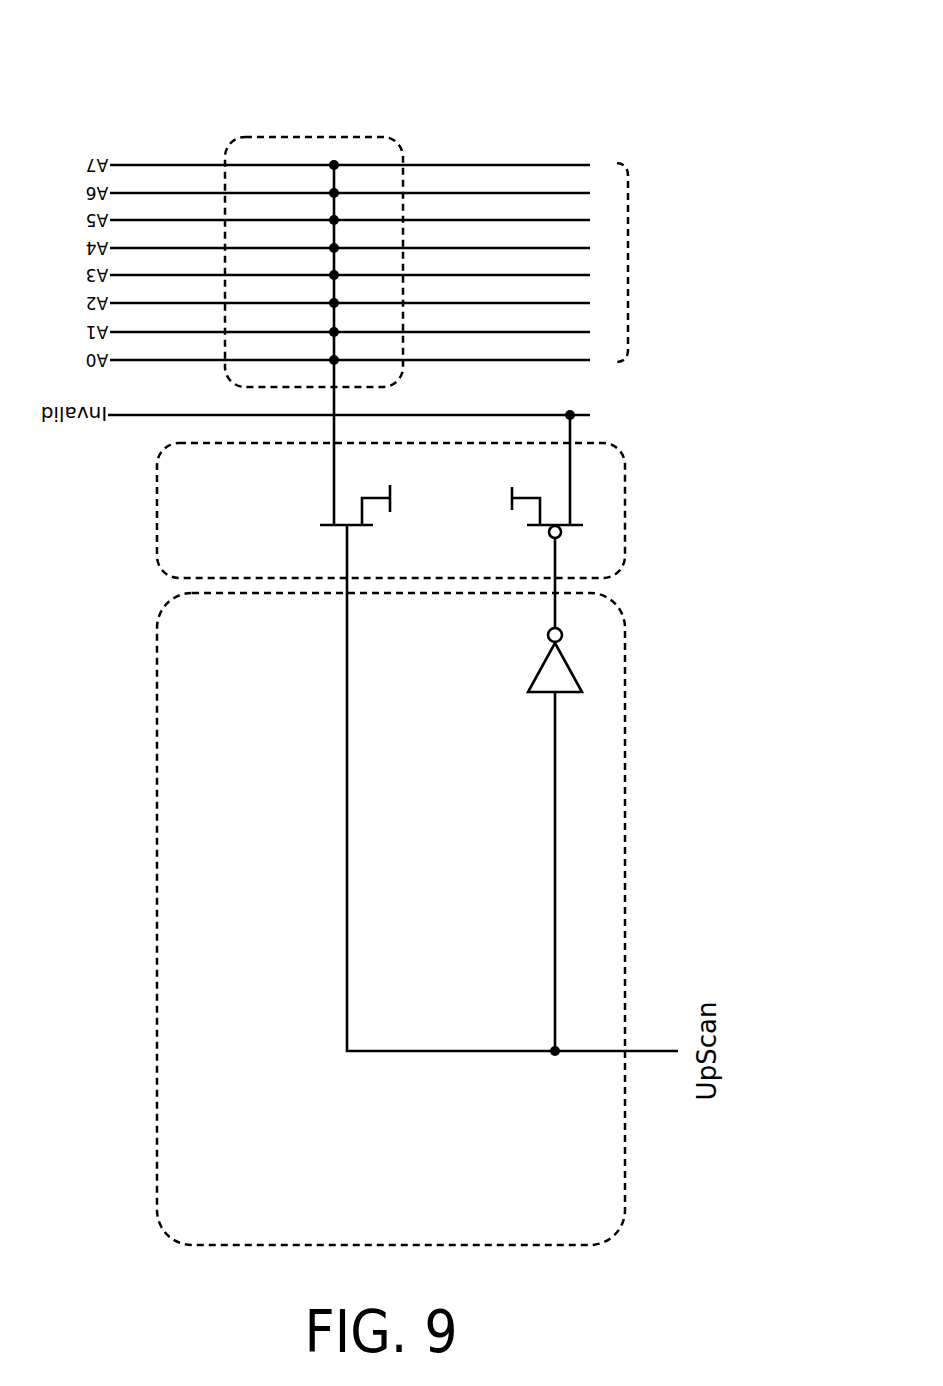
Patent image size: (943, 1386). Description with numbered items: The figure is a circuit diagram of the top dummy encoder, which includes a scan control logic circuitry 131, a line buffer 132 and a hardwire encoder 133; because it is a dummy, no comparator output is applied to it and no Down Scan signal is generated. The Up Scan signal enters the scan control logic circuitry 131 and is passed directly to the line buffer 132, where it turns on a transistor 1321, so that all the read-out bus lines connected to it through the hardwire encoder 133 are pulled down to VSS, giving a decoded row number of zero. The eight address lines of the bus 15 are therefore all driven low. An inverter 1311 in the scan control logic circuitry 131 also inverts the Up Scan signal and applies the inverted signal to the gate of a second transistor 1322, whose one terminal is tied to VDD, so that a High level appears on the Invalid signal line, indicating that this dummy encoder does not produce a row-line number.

The hardwire encoder 133 is at (305, 137).
The address bus 15 is at (646, 262).
The line buffer 132 is at (157, 524).
The transistor 1321 is at (320, 526).
The second transistor 1322 is at (527, 526).
The scan control logic circuitry 131 is at (157, 868).
The inverter 1311 is at (528, 672).